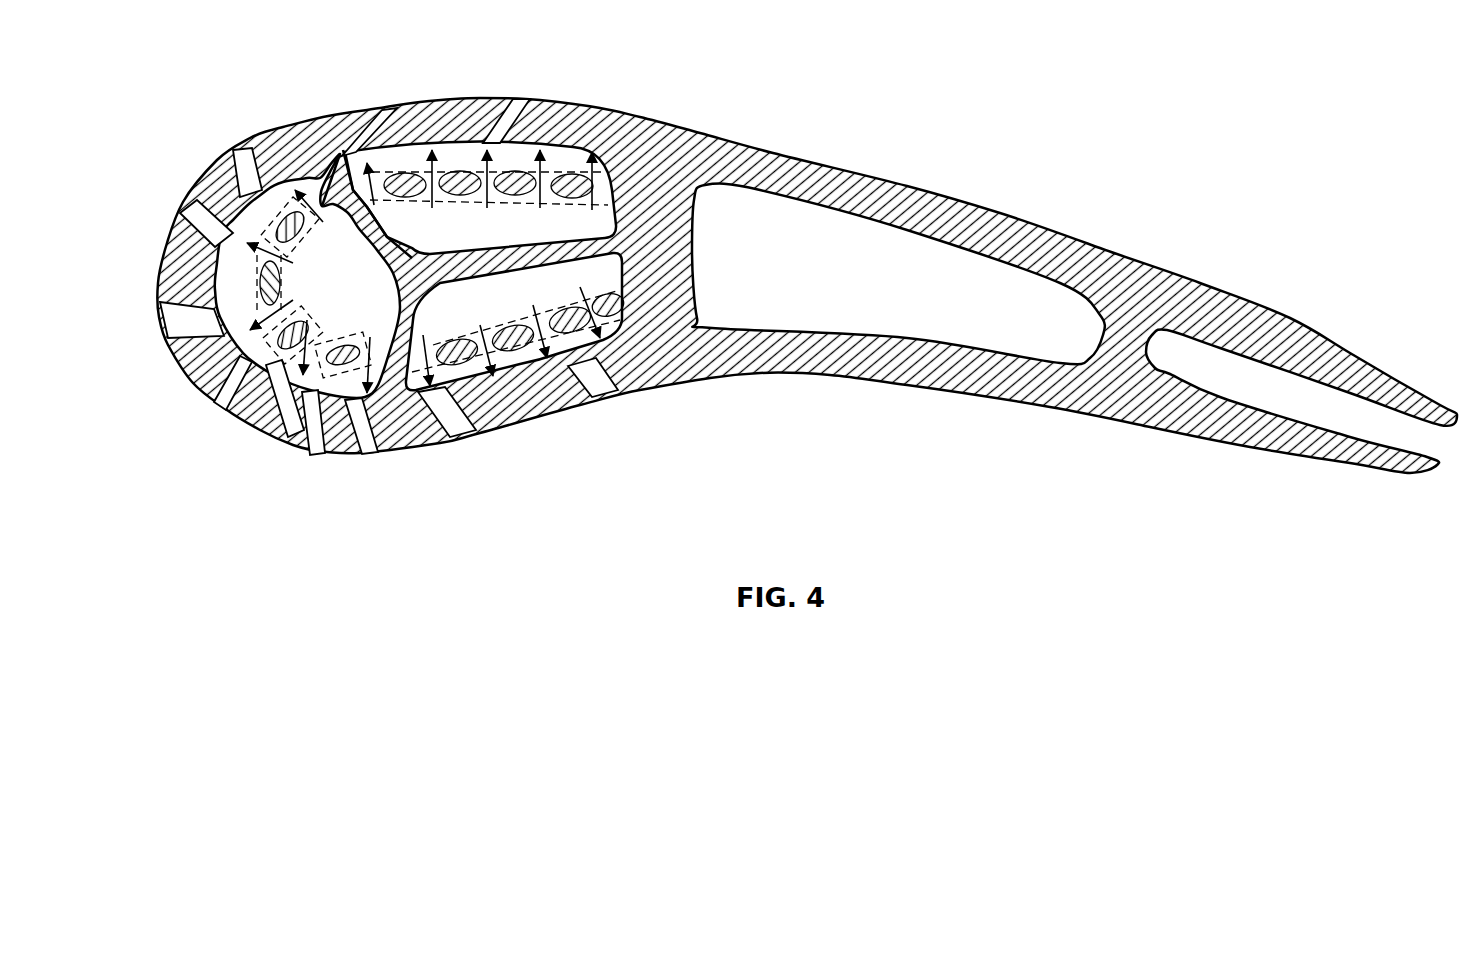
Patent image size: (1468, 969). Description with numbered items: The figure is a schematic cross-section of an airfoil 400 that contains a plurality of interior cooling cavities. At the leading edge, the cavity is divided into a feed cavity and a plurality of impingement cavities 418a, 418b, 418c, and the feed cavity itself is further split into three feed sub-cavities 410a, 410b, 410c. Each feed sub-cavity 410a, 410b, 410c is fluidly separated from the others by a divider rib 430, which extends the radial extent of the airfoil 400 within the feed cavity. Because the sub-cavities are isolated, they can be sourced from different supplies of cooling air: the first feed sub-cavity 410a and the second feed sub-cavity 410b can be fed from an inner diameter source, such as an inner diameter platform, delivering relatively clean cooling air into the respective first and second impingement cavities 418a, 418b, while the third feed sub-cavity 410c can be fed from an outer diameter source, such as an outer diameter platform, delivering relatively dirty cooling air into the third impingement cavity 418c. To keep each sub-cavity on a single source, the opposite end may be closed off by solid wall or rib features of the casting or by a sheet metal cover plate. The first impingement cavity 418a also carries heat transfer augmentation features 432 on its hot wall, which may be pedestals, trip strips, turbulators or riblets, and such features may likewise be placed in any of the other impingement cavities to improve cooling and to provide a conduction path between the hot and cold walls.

The airfoil 400 is at (1010, 68).
The first feed sub-cavity 410a is at (385, 300).
The second feed sub-cavity 410b is at (512, 314).
The third feed sub-cavity 410c is at (497, 241).
The first impingement cavity 418a is at (233, 277).
The second impingement cavity 418b is at (515, 372).
The third impingement cavity 418c is at (458, 152).
The divider rib 430 is at (342, 155).
The heat transfer augmentation features 432 is at (232, 188).